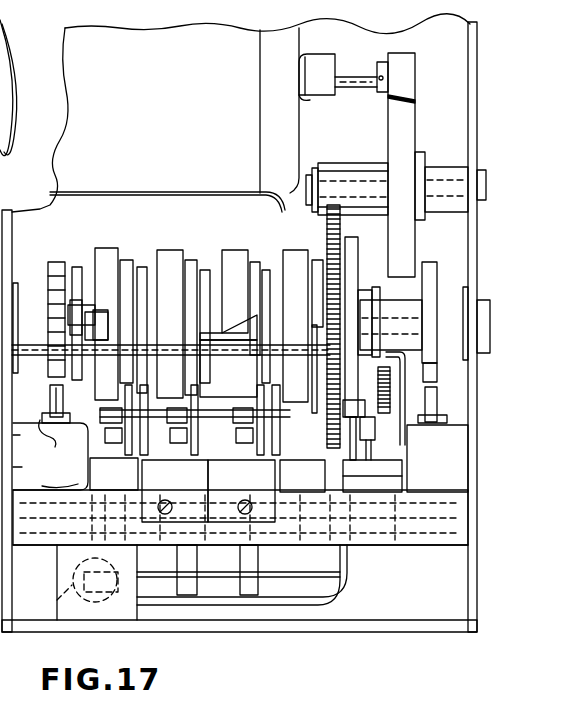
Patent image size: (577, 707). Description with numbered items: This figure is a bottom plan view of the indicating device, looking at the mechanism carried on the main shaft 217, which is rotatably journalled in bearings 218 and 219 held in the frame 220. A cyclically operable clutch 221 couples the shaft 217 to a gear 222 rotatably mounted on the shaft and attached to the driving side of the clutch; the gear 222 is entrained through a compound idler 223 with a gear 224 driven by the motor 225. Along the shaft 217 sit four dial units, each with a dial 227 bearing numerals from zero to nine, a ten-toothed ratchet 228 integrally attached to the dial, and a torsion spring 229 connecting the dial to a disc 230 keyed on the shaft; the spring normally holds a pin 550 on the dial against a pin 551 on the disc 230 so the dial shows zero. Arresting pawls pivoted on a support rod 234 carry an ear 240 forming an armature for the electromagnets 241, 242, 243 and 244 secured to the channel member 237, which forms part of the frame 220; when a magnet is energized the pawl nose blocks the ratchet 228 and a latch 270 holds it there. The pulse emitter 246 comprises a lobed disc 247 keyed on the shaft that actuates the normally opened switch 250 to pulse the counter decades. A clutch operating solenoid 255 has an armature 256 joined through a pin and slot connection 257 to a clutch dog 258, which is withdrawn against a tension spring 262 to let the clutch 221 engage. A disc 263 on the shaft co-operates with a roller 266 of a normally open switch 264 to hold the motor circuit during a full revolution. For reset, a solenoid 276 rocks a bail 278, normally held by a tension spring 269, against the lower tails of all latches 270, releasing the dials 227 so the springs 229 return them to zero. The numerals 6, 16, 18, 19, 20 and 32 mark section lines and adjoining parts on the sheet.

The housing 6 is at (32, 636).
The section line 16 is at (220, 240).
The section line 18 is at (403, 310).
The section line 19 is at (64, 252).
The section line 20 is at (437, 257).
The drive wheel 32 is at (10, 183).
The main shaft 217 is at (40, 268).
The bearing 218 is at (470, 362).
The bearing 219 is at (14, 366).
The frame 220 is at (470, 470).
The cyclically operable clutch 221 is at (370, 249).
The gear 222 is at (327, 224).
The compound idler 223 is at (388, 142).
The gear 224 is at (415, 75).
The motor 225 is at (277, 116).
The dial 227 is at (108, 248).
The ten-toothed ratchet 228 is at (276, 200).
The torsion spring 229 is at (98, 248).
The disc 230 is at (77, 267).
The support rod 234 is at (100, 417).
The channel member 237 is at (390, 548).
The ear 240 is at (240, 435).
The electromagnet 241 is at (240, 501).
The electromagnet 242 is at (195, 472).
The block 243 is at (258, 472).
The electromagnet 244 is at (312, 485).
The pulse emitter 246 is at (55, 260).
The disc 247 is at (50, 456).
The normally opened switch 250 is at (60, 480).
The clutch operating solenoid 255 is at (380, 488).
The armature 256 is at (372, 470).
The pin and slot connection 257 is at (406, 450).
The clutch dog 258 is at (372, 454).
The tension spring 262 is at (395, 420).
The disc 263 is at (437, 268).
The normally open switch 264 is at (450, 440).
The roller 266 is at (437, 400).
The tension spring 269 is at (29, 466).
The latch 270 is at (240, 560).
The solenoid 276 is at (77, 582).
The bail 278 is at (295, 598).
The pin 550 is at (93, 333).
The pin 551 is at (70, 305).